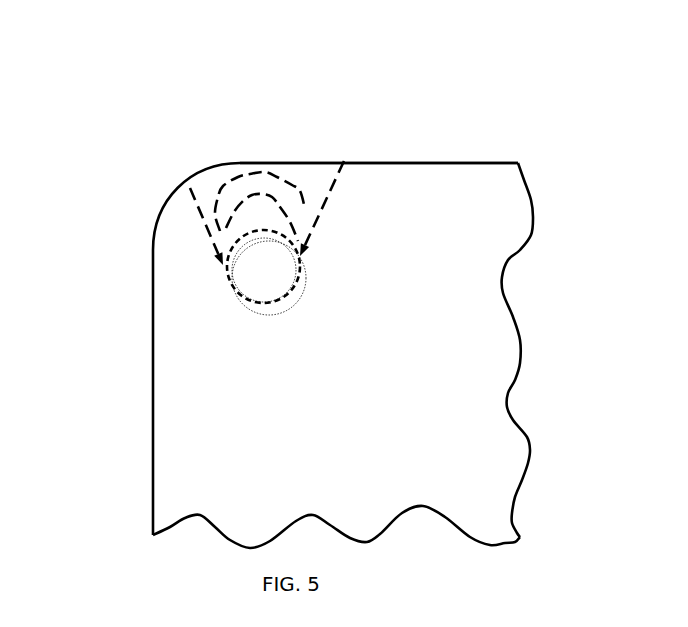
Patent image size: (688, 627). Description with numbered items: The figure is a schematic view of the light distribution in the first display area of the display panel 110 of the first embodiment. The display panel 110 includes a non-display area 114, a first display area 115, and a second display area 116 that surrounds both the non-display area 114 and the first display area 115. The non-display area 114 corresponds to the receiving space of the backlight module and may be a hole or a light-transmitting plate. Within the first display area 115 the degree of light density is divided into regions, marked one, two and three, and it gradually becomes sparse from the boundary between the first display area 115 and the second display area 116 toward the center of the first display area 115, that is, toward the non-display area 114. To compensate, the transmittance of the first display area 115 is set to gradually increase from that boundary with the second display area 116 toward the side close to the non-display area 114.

The display panel 110 is at (432, 72).
The non-display area 114 is at (253, 267).
The first display area 115 is at (253, 192).
The second display area 116 is at (410, 228).